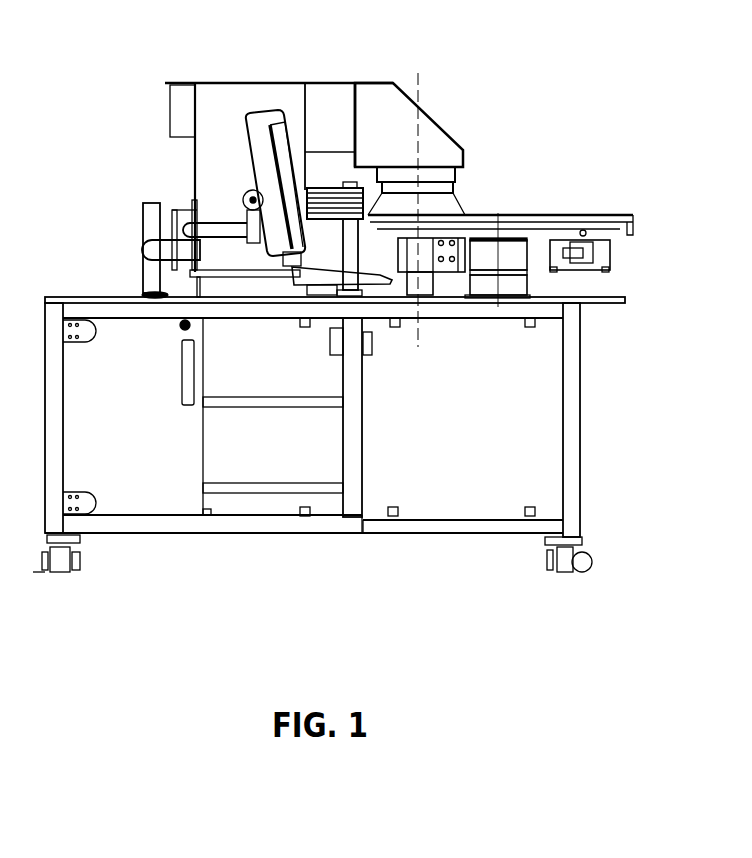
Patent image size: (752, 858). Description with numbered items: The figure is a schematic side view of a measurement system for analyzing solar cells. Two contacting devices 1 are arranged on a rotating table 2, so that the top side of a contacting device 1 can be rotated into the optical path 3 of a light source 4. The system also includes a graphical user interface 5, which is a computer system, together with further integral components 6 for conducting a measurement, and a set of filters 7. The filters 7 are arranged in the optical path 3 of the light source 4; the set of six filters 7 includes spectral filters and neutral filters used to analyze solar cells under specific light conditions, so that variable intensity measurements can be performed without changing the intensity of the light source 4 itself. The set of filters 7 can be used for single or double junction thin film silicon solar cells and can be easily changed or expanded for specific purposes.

The contacting device 1 is at (452, 237).
The rotating table 2 is at (613, 237).
The optical path 3 is at (418, 105).
The light source 4 is at (392, 190).
The graphical user interface 5 is at (260, 127).
The integral components 6 is at (115, 332).
The filters 7 is at (333, 190).